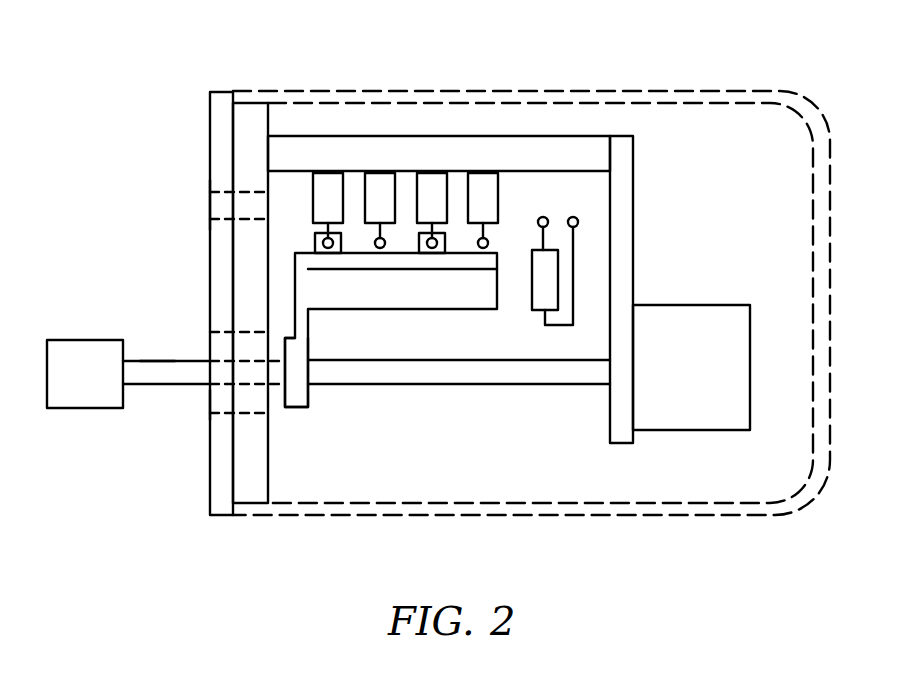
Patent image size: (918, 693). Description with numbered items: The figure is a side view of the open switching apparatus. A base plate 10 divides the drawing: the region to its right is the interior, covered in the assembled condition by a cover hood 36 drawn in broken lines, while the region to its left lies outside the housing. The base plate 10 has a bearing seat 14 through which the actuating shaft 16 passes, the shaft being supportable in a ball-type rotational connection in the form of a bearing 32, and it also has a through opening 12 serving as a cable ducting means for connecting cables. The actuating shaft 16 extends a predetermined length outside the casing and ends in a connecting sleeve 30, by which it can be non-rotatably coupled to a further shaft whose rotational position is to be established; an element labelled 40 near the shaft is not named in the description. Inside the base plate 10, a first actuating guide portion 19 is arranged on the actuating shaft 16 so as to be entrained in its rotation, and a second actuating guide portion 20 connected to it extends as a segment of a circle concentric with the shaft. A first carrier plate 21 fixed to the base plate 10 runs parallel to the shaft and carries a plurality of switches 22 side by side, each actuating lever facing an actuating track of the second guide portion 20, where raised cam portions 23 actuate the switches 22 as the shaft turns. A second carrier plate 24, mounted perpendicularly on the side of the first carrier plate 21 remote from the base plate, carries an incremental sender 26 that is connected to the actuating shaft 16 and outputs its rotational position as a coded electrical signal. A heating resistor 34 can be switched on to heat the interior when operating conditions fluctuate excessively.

The base plate 10 is at (252, 463).
The through opening 12 is at (210, 205).
The bearing seat 14 is at (210, 397).
The actuating shaft 16 is at (440, 372).
The first actuating guide portion 19 is at (297, 400).
The second actuating guide portion 20 is at (403, 263).
The first carrier plate 21 is at (411, 168).
The switches 22 is at (340, 205).
The raised cam portions 23 is at (318, 246).
The second carrier plate 24 is at (620, 203).
The incremental sender 26 is at (694, 377).
The connecting sleeve 30 is at (98, 391).
The bearing 32 is at (210, 360).
The heating resistor 34 is at (543, 293).
The cover hood 36 is at (825, 147).
The shaft coupling 40 is at (153, 363).